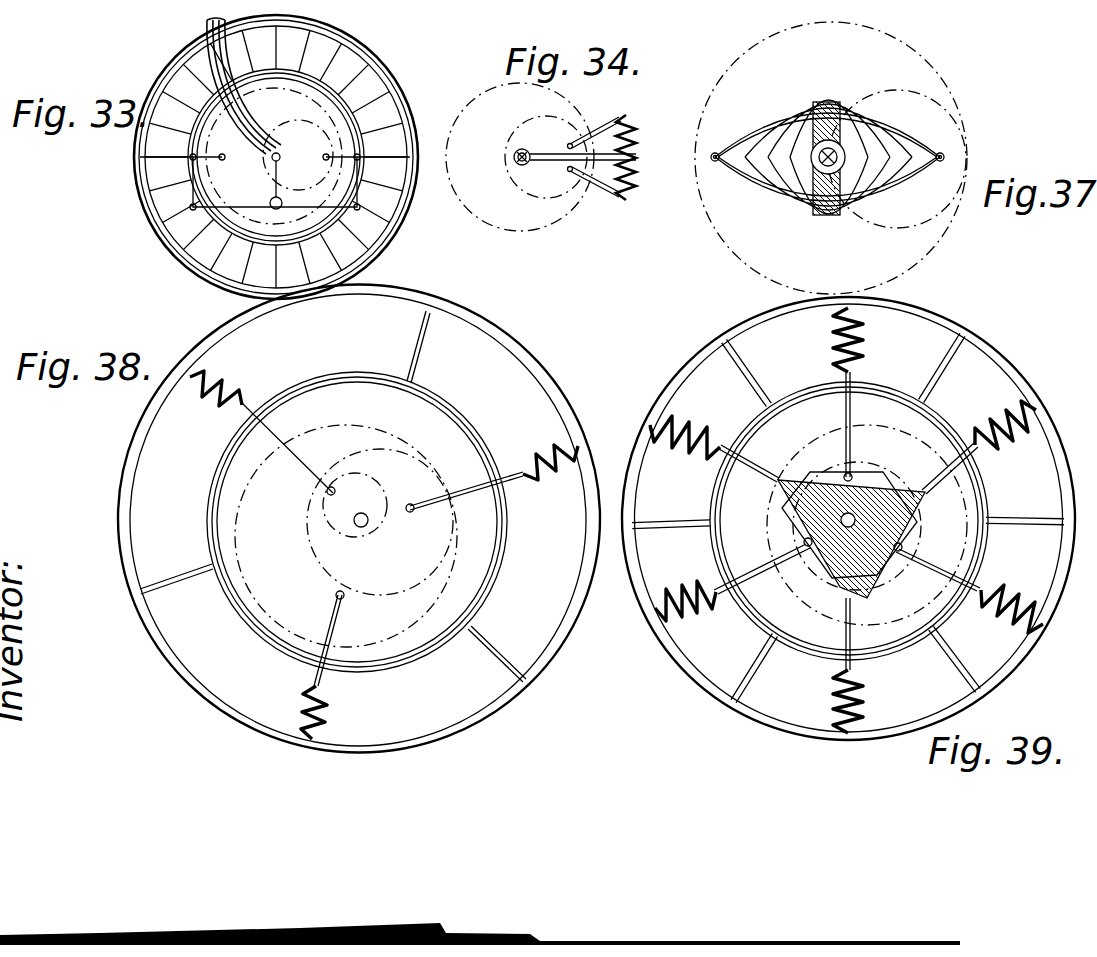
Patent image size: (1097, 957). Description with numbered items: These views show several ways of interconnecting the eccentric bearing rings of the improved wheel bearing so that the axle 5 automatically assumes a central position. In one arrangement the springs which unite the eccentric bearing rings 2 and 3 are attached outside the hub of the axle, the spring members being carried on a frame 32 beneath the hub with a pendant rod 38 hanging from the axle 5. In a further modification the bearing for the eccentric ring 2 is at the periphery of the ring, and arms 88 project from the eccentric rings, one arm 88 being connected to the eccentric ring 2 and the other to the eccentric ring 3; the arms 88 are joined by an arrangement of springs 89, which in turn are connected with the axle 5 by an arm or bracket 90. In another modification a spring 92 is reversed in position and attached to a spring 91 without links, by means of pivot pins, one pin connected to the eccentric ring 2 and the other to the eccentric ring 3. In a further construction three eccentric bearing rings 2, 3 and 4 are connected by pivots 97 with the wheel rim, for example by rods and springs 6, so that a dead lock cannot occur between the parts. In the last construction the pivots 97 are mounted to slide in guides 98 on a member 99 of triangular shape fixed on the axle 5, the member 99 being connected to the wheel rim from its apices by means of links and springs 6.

In FIG. 33, the eccentric bearing ring 2 is at (310, 133).
In FIG. 34, the eccentric bearing ring 2 is at (533, 183).
In FIG. 37, the eccentric bearing ring 2 is at (940, 140).
In FIG. 38, the eccentric bearing ring 2 is at (352, 531).
In FIG. 34, the eccentric bearing ring 3 is at (520, 157).
In FIG. 37, the eccentric bearing ring 3 is at (912, 240).
In FIG. 38, the eccentric bearing ring 3 is at (337, 552).
In FIG. 38, the eccentric bearing ring 4 is at (250, 507).
In FIG. 33, the axle 5 is at (280, 156).
In FIG. 34, the axle 5 is at (513, 161).
In FIG. 37, the axle 5 is at (840, 156).
In FIG. 38, the axle 5 is at (368, 519).
In FIG. 38, the spring 6 is at (320, 716).
In FIG. 39, the spring 6 is at (866, 710).
In FIG. 33, the frame 32 is at (357, 170).
In FIG. 33, the pendulum rod 38 is at (279, 180).
In FIG. 34, the arms 88 is at (613, 118).
In FIG. 34, the springs 89 is at (640, 135).
In FIG. 34, the arm or bracket 90 is at (552, 154).
In FIG. 37, the spring 91 is at (797, 115).
In FIG. 37, the spring 92 is at (805, 200).
In FIG. 38, the pivots 97 is at (414, 504).
In FIG. 39, the pivots 97 is at (806, 546).
In FIG. 39, the guides 98 is at (881, 579).
In FIG. 39, the member 99 is at (900, 526).